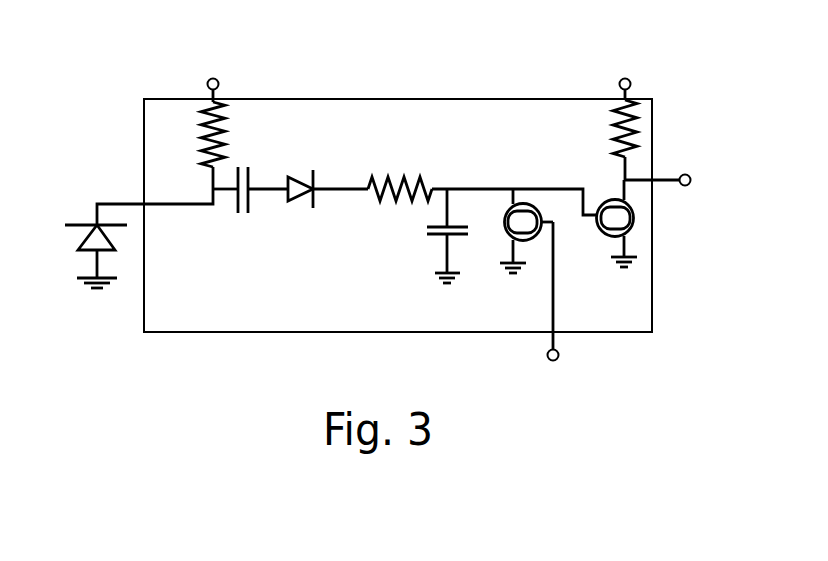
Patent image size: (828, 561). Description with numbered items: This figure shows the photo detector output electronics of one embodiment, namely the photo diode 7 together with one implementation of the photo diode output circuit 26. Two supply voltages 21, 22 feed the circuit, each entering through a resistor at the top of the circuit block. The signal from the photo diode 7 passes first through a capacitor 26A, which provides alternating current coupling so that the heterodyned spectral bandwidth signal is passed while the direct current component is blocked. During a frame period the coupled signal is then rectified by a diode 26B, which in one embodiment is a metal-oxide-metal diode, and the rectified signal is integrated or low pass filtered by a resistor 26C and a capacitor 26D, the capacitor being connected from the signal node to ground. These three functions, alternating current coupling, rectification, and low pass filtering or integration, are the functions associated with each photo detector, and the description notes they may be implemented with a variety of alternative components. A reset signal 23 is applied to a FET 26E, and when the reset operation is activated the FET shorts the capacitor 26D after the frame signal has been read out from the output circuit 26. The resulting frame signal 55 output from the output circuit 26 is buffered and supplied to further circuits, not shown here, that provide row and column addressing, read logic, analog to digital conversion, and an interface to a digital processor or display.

The photo diode 7 is at (75, 245).
The supply voltage 21 is at (220, 81).
The supply voltage 22 is at (618, 82).
The reset signal 23 is at (547, 357).
The photo diode output circuit 26 is at (143, 117).
The capacitor 26A is at (238, 215).
The diode 26B is at (305, 182).
The resistor 26C is at (395, 180).
The capacitor 26D is at (442, 240).
The FET 26E is at (512, 205).
The frame signal 55 is at (677, 190).